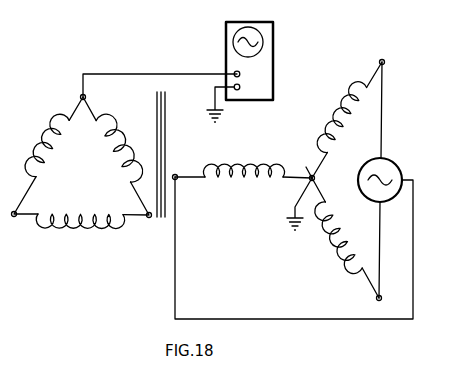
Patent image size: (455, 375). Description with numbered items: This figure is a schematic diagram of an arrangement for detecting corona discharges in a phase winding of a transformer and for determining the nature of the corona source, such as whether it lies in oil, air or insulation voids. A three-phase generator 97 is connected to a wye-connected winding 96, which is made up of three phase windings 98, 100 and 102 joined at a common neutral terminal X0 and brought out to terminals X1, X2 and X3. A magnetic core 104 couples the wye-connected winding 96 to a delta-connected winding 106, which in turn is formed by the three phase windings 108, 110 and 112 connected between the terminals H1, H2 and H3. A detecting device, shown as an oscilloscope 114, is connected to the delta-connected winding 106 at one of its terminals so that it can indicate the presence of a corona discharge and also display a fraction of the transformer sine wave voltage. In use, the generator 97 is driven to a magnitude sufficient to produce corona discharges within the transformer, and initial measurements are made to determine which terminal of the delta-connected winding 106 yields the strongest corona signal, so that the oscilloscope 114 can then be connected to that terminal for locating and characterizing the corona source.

The wye-connected winding 96 is at (286, 178).
The three-phase generator 97 is at (390, 164).
The phase winding 98 is at (258, 179).
The phase winding 100 is at (350, 102).
The phase winding 102 is at (340, 250).
The magnetic core 104 is at (166, 117).
The delta-connected winding 106 is at (83, 158).
The phase winding 108 is at (99, 221).
The phase winding 110 is at (49, 149).
The phase winding 112 is at (119, 149).
The oscilloscope 114 is at (273, 42).
The primary terminal H1 is at (14, 217).
The primary terminal H2 is at (82, 96).
The primary terminal H3 is at (144, 229).
The secondary neutral terminal X0 is at (310, 176).
The secondary terminal X1 is at (176, 174).
The secondary terminal X2 is at (382, 61).
The secondary terminal X3 is at (363, 305).